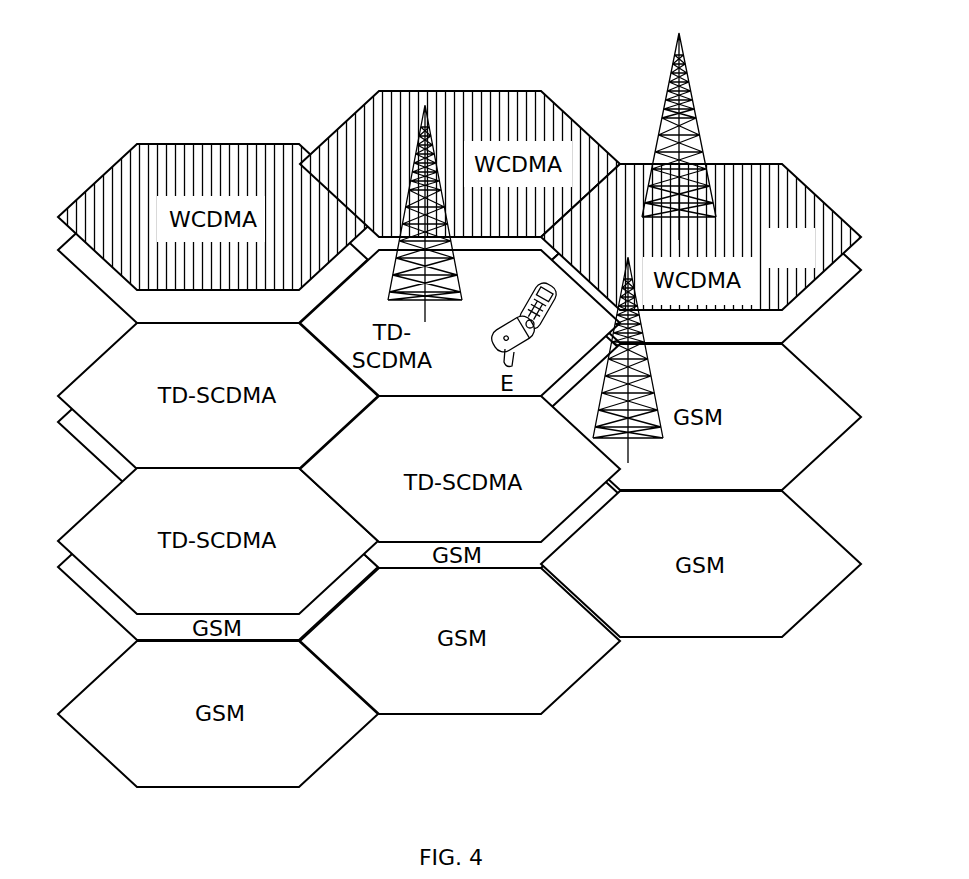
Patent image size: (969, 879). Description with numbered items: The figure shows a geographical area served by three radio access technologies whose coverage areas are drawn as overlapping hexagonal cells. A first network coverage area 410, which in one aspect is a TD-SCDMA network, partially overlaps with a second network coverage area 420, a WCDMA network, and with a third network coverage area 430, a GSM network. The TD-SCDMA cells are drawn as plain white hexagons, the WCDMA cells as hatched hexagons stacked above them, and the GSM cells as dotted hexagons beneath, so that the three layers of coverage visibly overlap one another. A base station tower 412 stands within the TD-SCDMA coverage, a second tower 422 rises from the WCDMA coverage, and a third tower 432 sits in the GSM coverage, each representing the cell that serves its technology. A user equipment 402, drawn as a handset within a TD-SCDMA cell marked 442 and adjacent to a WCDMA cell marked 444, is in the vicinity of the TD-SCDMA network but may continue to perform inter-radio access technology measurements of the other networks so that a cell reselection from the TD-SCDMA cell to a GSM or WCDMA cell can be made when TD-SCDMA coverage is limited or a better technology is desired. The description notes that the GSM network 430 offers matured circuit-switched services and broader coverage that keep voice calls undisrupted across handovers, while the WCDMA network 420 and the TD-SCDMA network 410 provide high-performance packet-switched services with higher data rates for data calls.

The mobile device (UE) 402 is at (530, 289).
The first network coverage area 410 is at (90, 365).
The TD-SCDMA base station 412 is at (423, 107).
The second network coverage area 420 is at (701, 217).
The WCDMA base station 422 is at (688, 32).
The third network coverage area 430 is at (840, 545).
The GSM base station 432 is at (648, 366).
The TD-SCDMA cell 442 is at (418, 389).
The WCDMA cell 444 is at (773, 260).